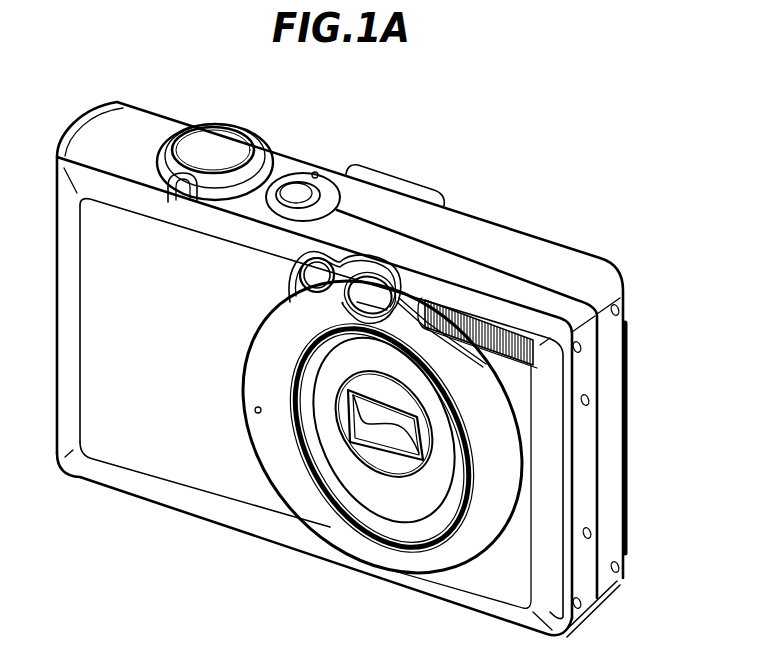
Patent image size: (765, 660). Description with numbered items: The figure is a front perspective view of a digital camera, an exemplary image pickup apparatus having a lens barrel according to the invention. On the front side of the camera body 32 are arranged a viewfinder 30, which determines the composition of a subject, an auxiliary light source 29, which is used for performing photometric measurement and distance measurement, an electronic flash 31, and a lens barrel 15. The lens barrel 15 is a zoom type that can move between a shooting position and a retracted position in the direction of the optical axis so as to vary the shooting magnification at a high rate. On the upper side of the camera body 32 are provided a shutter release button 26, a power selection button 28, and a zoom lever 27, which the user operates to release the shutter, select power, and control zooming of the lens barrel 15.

The lens barrel 15 is at (377, 490).
The shutter release button 26 is at (220, 140).
The zoom lever 27 is at (261, 147).
The power selection button 28 is at (296, 188).
The auxiliary light source 29 is at (318, 273).
The viewfinder 30 is at (373, 293).
The electronic flash 31 is at (482, 320).
The camera body 32 is at (185, 462).